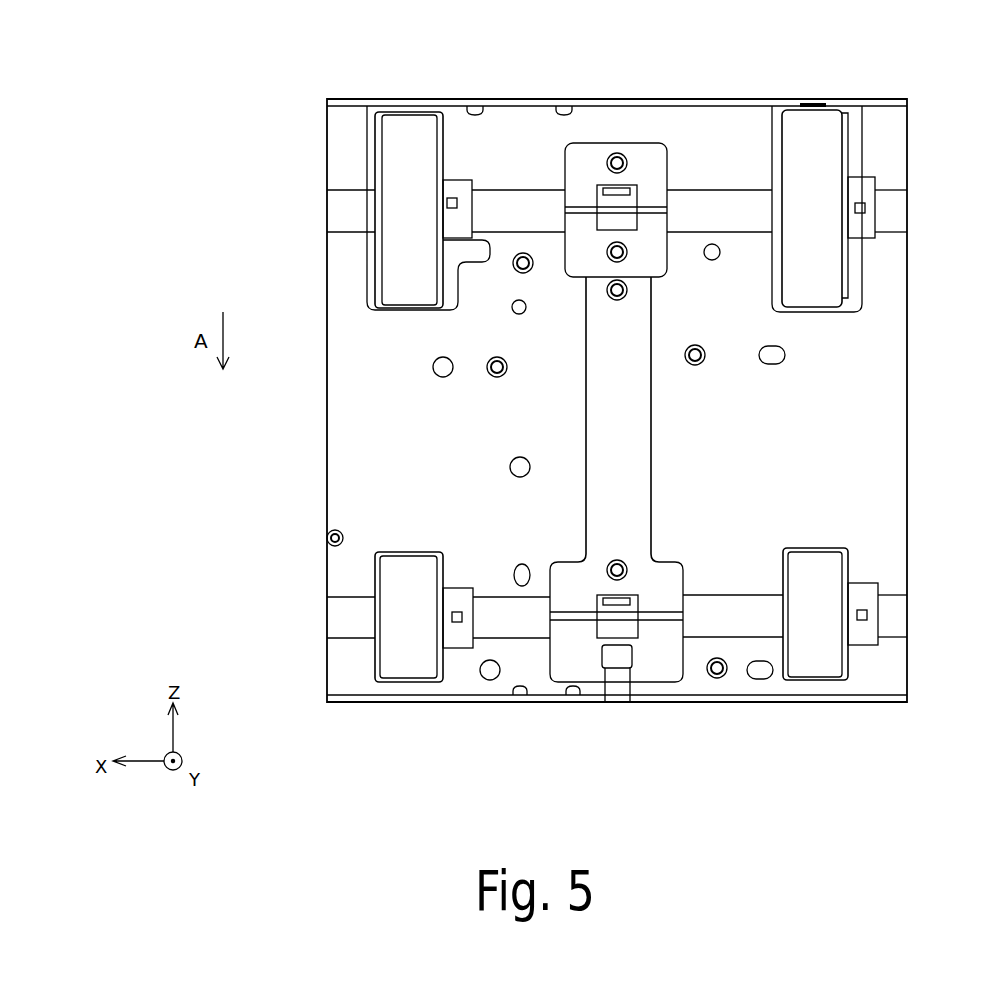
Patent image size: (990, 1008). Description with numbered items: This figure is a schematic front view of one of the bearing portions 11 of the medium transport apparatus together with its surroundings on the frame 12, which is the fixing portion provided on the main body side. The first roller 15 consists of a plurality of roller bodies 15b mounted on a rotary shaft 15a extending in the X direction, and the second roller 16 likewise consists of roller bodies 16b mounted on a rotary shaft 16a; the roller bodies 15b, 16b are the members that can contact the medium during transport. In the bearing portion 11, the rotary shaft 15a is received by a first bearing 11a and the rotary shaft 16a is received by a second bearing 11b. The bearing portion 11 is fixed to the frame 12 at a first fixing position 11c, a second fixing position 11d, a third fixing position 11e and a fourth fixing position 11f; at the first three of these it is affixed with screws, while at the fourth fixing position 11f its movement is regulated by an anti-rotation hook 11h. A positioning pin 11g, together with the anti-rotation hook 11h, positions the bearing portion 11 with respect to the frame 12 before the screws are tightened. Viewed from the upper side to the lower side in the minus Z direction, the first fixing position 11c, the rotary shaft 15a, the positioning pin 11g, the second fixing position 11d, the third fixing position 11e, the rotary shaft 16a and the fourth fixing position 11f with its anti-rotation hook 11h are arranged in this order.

The bearing portion 11 is at (633, 382).
The first bearing 11a is at (655, 197).
The second bearing 11b is at (567, 613).
The first fixing position 11c is at (617, 153).
The second fixing position 11d is at (620, 282).
The third fixing position 11e is at (622, 576).
The fourth fixing position 11f is at (618, 660).
The positioning pin 11g is at (612, 246).
The anti-rotation hook 11h is at (635, 727).
The frame 12 is at (353, 435).
The first roller 15 is at (437, 158).
The rotary shaft 15a is at (348, 208).
The roller body 15b is at (409, 179).
The second roller 16 is at (428, 678).
The rotary shaft 16a is at (350, 620).
The roller body 16b is at (400, 650).